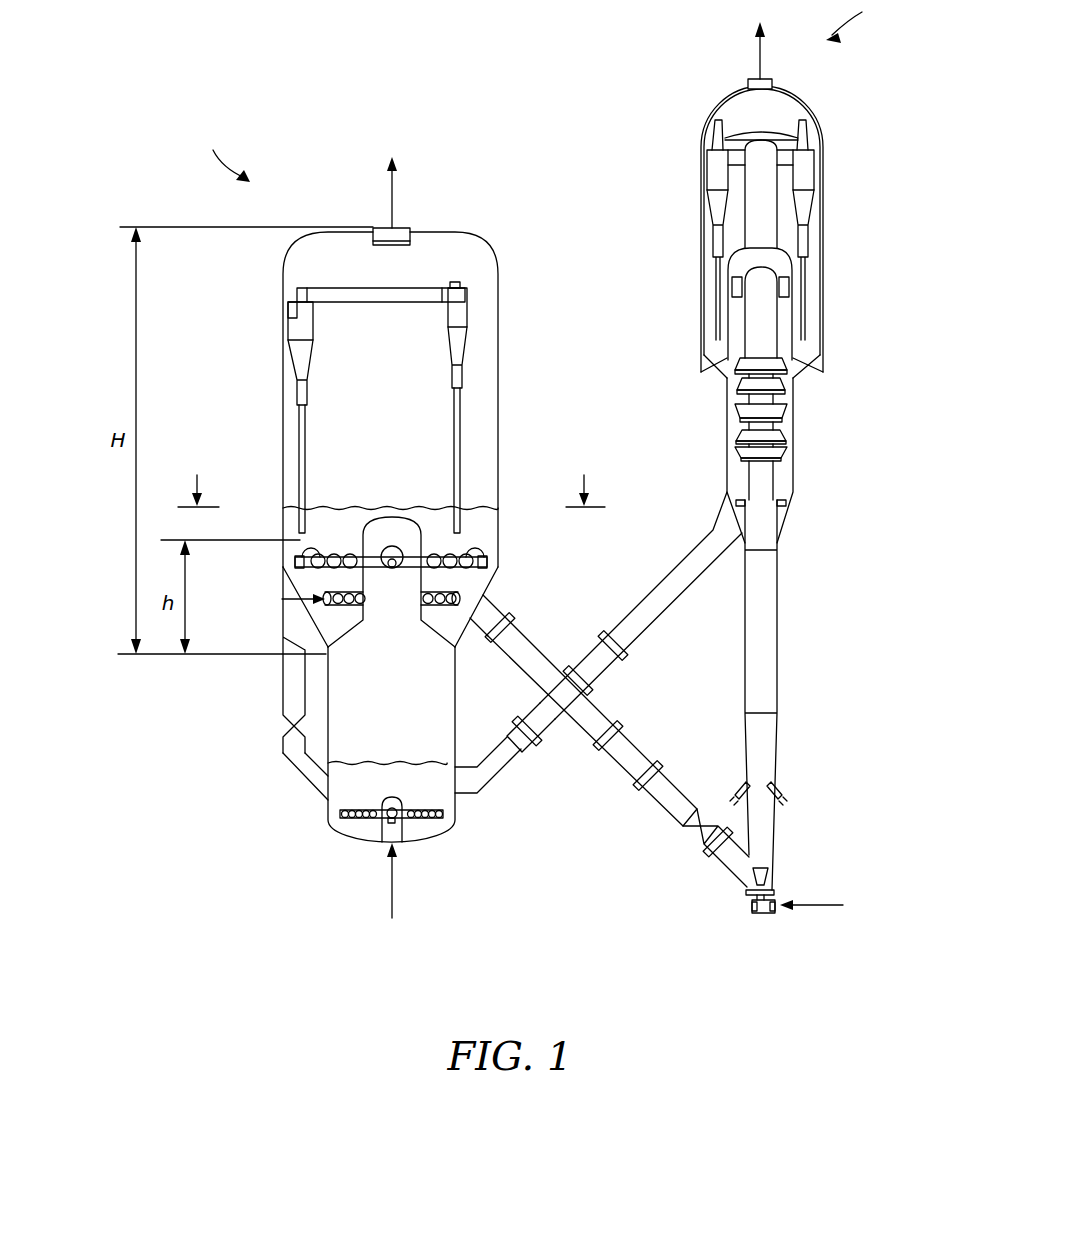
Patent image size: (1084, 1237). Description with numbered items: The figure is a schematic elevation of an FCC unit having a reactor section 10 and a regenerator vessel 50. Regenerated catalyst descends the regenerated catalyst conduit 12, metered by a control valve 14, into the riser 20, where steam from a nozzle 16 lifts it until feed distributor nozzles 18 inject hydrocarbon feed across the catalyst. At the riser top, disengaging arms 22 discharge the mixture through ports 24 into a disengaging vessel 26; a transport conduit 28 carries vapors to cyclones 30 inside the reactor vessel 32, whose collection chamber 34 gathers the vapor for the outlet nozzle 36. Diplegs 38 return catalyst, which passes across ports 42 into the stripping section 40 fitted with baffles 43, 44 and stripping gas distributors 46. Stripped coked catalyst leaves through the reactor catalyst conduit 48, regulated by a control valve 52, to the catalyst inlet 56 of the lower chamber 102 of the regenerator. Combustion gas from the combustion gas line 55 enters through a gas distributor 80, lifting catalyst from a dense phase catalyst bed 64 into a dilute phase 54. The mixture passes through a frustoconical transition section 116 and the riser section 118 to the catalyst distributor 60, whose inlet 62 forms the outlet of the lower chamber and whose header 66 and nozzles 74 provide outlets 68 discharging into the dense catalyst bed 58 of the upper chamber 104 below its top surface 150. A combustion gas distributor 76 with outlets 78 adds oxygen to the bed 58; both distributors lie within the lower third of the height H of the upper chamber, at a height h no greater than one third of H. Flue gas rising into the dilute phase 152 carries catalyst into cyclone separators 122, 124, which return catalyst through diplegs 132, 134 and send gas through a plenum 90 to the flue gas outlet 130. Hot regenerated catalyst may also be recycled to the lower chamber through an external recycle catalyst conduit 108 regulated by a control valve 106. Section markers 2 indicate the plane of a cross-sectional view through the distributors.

The reactor section 10 is at (856, 22).
The regenerated catalyst conduit 12 is at (646, 775).
The control valve 14 is at (700, 822).
The nozzle 16 is at (762, 913).
The feed distributor nozzles 18 is at (743, 781).
The riser 20 is at (760, 680).
The disengaging arms 22 is at (777, 300).
The ports 24 is at (790, 287).
The disengaging vessel 26 is at (815, 366).
The transport conduit 28 is at (765, 222).
The cyclones 30 is at (717, 172).
The reactor vessel 32 is at (810, 270).
The collection chamber 34 is at (783, 100).
The outlet nozzle 36 is at (750, 82).
The diplegs 38 is at (783, 310).
The stripping section 40 is at (786, 432).
The ports 42 is at (762, 346).
The baffles 43 is at (790, 410).
The baffles 44 is at (792, 372).
The distributors 46 is at (780, 505).
The reactor catalyst conduit 48 is at (707, 572).
The regenerator vessel 50 is at (218, 162).
The control valve 52 is at (515, 748).
The dilute phase 54 is at (430, 680).
The combustion gas line 55 is at (393, 902).
The catalyst inlet 56 is at (468, 768).
The dense catalyst bed 58 is at (470, 540).
The catalyst distributor 60 is at (470, 540).
The inlet 62 is at (412, 548).
The dense phase catalyst bed 64 is at (436, 790).
The header 66 is at (355, 540).
The outlets 68 is at (300, 562).
The nozzles 74 is at (318, 555).
The combustion gas distributor 76 is at (492, 612).
The outlets 78 is at (455, 605).
The gas distributor 80 is at (397, 820).
The plenum 90 is at (435, 238).
The lower chamber 102 is at (345, 690).
The upper chamber 104 is at (499, 338).
The control valve 106 is at (295, 725).
The external recycle catalyst conduit 108 is at (305, 790).
The frustoconical transition section 116 is at (322, 606).
The riser section 118 is at (320, 590).
The cyclone separator 122 is at (300, 345).
The cyclone separator 124 is at (467, 305).
The flue gas outlet 130 is at (375, 228).
The dipleg 132 is at (300, 443).
The dipleg 134 is at (460, 418).
The top surface 150 is at (330, 506).
The dilute phase 152 is at (497, 453).
The section line 2 is at (392, 491).